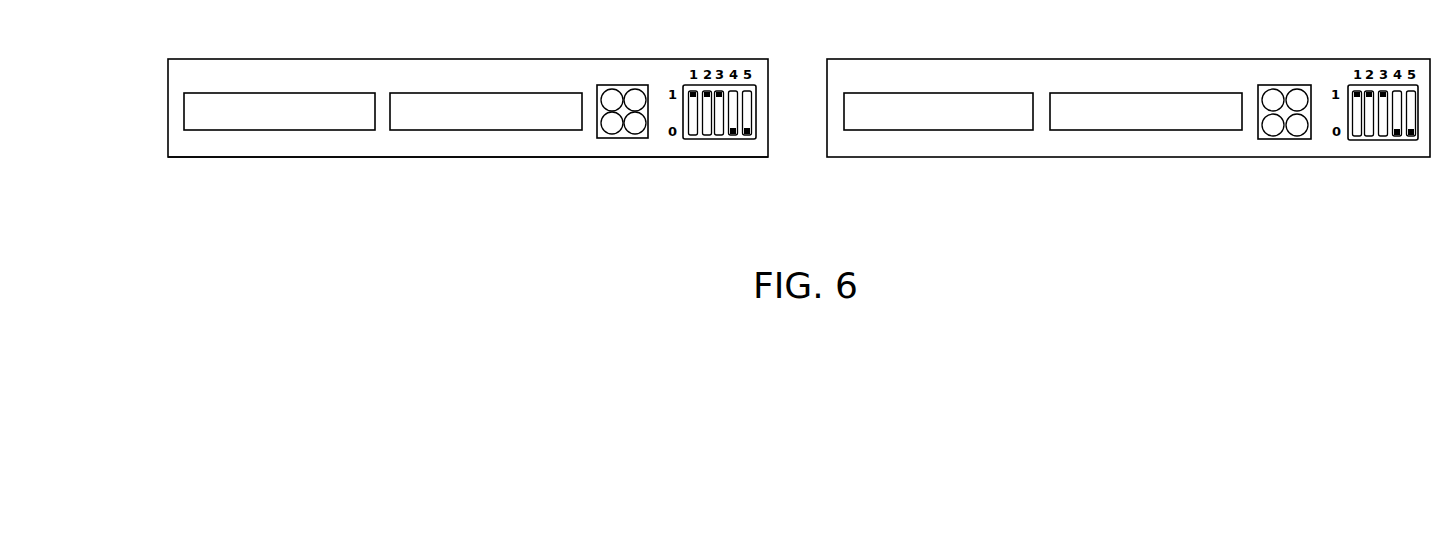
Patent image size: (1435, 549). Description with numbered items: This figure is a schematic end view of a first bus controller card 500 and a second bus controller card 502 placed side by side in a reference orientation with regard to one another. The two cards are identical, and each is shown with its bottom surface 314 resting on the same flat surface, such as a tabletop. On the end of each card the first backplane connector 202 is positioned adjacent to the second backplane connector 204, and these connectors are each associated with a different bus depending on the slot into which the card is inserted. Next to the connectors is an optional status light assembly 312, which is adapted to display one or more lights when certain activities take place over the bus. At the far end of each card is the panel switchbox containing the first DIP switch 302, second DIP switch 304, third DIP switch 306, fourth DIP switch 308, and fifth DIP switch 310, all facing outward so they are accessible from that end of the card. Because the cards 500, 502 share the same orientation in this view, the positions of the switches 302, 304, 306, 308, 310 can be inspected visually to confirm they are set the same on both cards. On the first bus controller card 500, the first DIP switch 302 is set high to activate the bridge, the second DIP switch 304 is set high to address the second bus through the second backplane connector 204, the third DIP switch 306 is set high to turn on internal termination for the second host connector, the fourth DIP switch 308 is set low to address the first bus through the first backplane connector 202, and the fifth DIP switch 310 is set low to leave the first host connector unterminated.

The first bus controller card 500 is at (329, 58).
The second bus controller card 502 is at (1002, 58).
The second backplane connector 204 is at (293, 122).
The first backplane connector 202 is at (499, 122).
The status light assembly 312 is at (630, 85).
The bottom surface 314 is at (316, 158).
The first DIP switch 302 is at (693, 140).
The second DIP switch 304 is at (707, 140).
The third DIP switch 306 is at (719, 140).
The fourth DIP switch 308 is at (733, 140).
The fifth DIP switch 310 is at (747, 140).